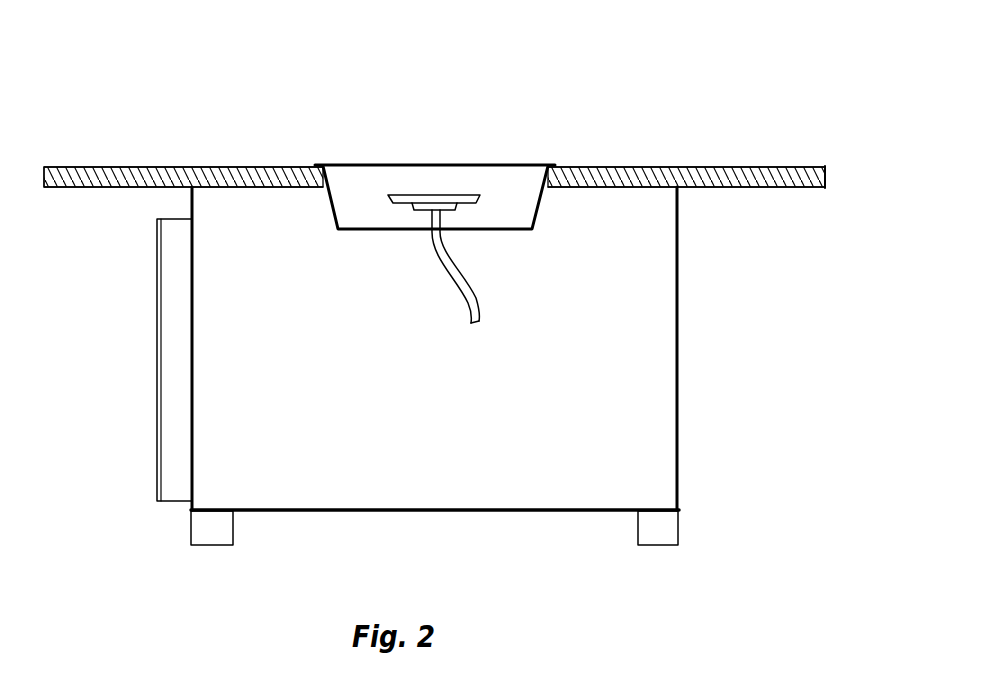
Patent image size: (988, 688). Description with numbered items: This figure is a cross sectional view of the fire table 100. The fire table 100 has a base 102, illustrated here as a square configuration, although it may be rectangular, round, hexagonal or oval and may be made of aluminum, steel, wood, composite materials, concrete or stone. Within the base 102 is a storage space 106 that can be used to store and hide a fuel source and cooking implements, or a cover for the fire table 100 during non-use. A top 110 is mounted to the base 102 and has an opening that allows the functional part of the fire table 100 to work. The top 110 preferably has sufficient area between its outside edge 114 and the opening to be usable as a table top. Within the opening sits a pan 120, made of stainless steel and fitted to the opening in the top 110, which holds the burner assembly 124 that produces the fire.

The fire table 100 is at (651, 102).
The base 102 is at (323, 166).
The storage space 106 is at (546, 412).
The top 110 is at (787, 166).
The outside edge 114 is at (826, 180).
The pan 120 is at (528, 166).
The burner assembly 124 is at (437, 195).